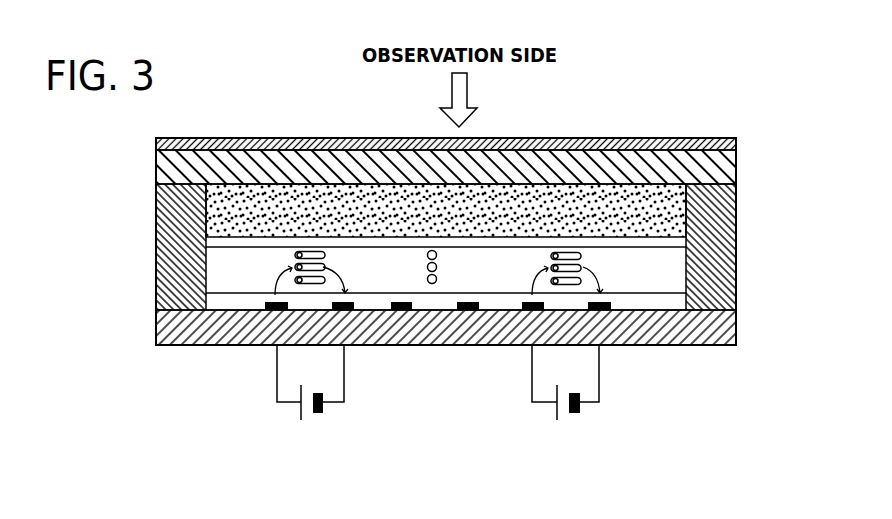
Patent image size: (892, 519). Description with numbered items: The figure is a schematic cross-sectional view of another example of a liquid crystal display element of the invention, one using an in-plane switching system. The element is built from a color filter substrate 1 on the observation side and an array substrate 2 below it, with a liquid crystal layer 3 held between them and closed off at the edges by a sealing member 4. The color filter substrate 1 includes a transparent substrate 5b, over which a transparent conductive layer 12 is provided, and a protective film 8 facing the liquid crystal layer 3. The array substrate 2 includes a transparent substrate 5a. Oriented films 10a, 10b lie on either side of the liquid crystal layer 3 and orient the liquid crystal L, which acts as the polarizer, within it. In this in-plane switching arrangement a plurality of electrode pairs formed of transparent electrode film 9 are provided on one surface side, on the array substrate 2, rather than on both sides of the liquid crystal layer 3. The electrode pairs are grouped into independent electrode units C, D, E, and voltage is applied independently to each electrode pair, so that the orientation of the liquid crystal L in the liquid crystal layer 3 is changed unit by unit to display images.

The color filter substrate 1 is at (108, 142).
The array substrate 2 is at (108, 290).
The liquid crystal layer 3 is at (108, 253).
The sealing member 4 is at (713, 205).
The transparent substrate 5a is at (710, 330).
The transparent substrate 5b is at (710, 170).
The protective film 8 is at (222, 221).
The transparent electrode film 9 is at (265, 307).
The oriented film 10a is at (657, 290).
The oriented film 10b is at (657, 243).
The transparent conductive layer 12 is at (730, 140).
The liquid crystal L is at (306, 252).
The electrode unit C is at (349, 440).
The electrode unit D is at (476, 440).
The electrode unit E is at (607, 440).